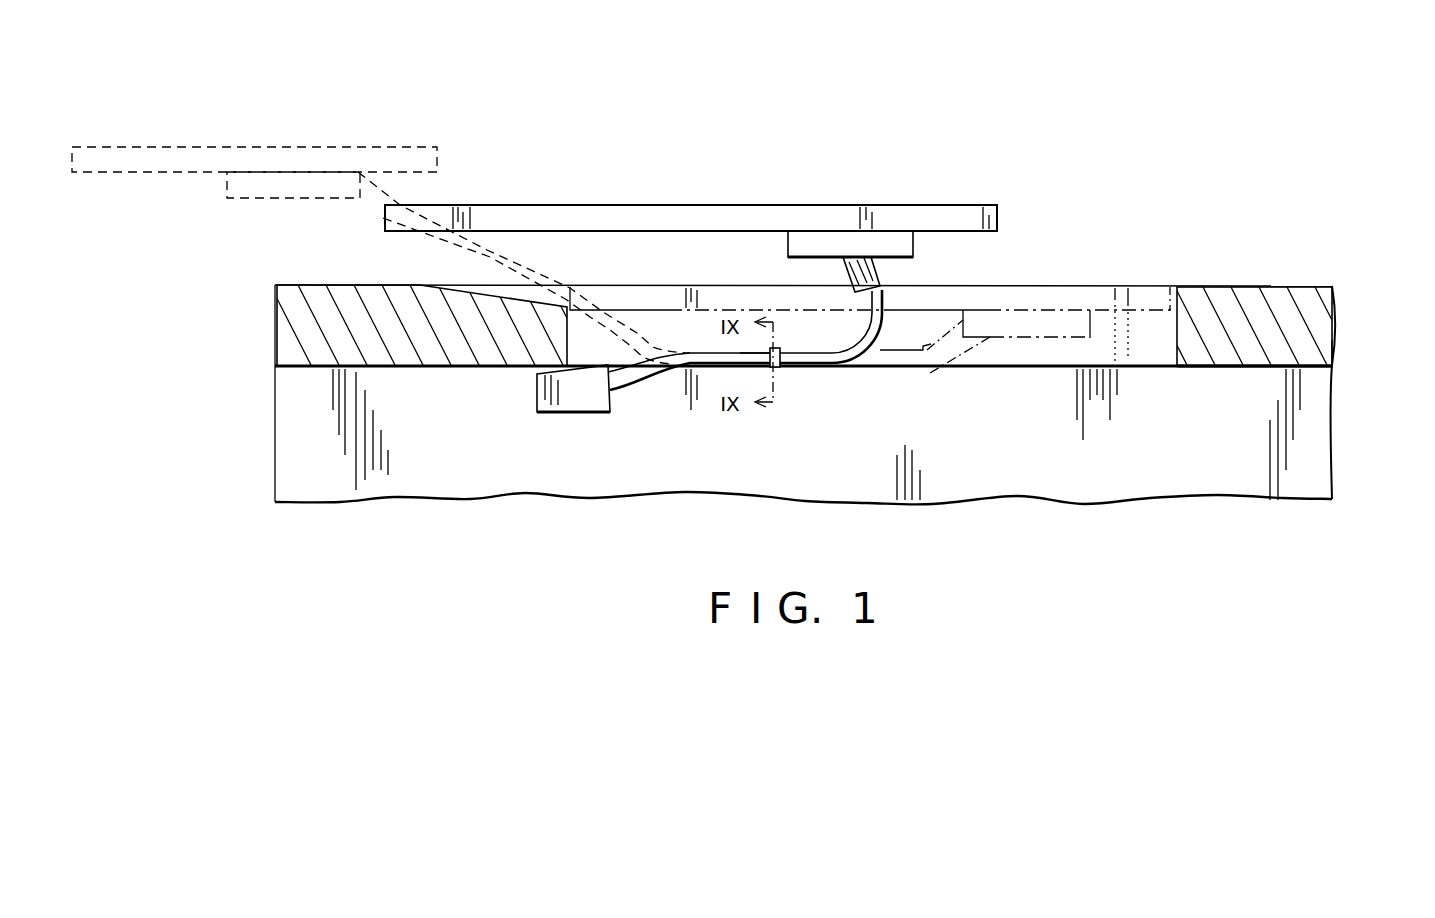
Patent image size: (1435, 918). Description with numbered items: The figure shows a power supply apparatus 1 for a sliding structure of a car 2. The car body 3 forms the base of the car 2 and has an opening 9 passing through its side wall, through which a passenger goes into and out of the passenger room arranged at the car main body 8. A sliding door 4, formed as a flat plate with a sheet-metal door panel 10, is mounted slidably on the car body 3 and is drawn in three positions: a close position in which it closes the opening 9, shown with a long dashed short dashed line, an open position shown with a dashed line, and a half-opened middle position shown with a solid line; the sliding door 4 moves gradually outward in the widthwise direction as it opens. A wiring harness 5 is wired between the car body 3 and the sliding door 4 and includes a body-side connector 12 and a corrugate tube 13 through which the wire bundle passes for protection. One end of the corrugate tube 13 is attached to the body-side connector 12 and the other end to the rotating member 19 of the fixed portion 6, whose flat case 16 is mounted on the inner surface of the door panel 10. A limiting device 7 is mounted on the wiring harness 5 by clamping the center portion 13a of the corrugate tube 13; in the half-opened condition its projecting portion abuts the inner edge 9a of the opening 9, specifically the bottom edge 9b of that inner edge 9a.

The power supply apparatus 1 is at (1048, 163).
The car 2 is at (1340, 361).
The car body 3 is at (1335, 420).
The sliding door 4 is at (356, 146).
The wiring harness 5 is at (543, 262).
The fixed portion 6 is at (291, 200).
The limiting device 7 is at (770, 363).
The car main body 8 is at (958, 474).
The opening 9 is at (1175, 318).
The inner edge 9a is at (1167, 371).
The bottom edge 9b is at (930, 372).
The door panel 10 is at (300, 150).
The body-side connector 12 is at (573, 413).
The corrugate tube 13 is at (500, 243).
The center portion 13a is at (780, 367).
The case 16 is at (253, 160).
The rotating member 19 is at (398, 195).